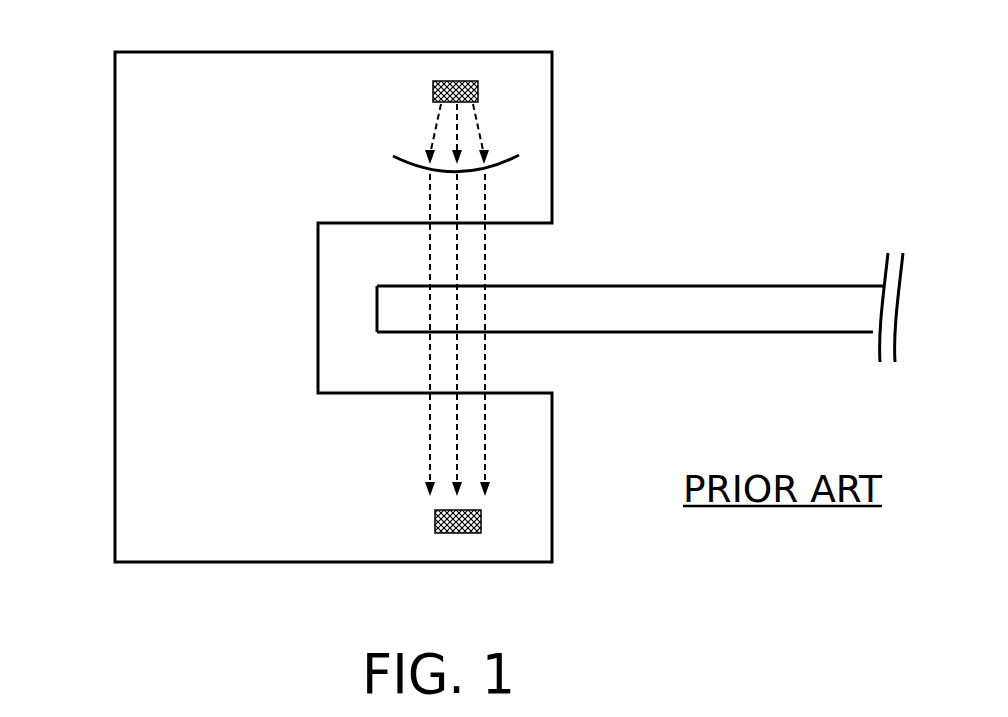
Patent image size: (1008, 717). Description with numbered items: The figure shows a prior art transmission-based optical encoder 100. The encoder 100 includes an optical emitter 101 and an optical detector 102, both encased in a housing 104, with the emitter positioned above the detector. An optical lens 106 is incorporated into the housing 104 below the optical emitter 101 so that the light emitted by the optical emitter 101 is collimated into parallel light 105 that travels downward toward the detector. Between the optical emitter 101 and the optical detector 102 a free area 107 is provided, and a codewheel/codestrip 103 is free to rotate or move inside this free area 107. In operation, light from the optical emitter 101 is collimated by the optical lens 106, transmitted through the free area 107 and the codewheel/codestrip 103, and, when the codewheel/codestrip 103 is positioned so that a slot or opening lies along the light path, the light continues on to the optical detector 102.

The transmission-based optical encoder 100 is at (726, 128).
The optical emitter 101 is at (496, 84).
The optical detector 102 is at (503, 525).
The codewheel/codestrip 103 is at (752, 319).
The housing 104 is at (188, 546).
The parallel light 105 is at (508, 362).
The optical lens 106 is at (520, 181).
The free area 107 is at (324, 364).